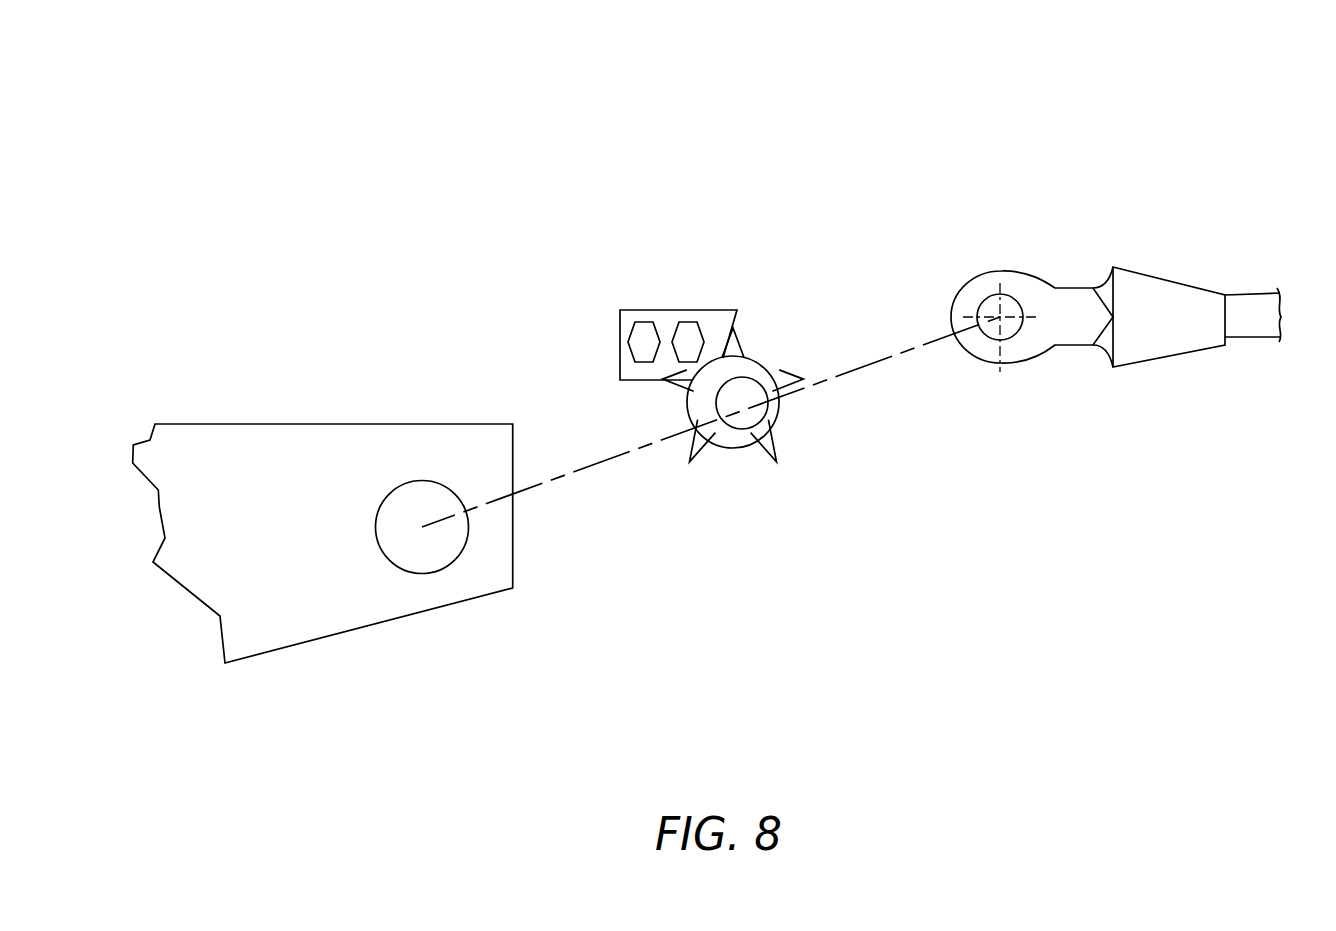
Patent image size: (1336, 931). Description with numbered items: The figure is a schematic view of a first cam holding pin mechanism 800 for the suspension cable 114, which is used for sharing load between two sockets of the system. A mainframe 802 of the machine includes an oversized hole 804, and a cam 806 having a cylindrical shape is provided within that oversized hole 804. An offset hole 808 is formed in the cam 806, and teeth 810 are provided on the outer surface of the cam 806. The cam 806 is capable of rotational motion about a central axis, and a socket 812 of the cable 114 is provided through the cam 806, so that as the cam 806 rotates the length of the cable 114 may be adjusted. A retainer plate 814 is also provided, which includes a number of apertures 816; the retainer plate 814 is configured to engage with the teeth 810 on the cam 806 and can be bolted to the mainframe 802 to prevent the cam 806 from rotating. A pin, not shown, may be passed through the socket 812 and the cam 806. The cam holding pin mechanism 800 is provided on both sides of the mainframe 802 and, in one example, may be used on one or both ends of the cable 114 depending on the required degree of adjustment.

The first cam holding pin mechanism 800 is at (1121, 76).
The mainframe 802 is at (270, 440).
The oversized hole 804 is at (426, 497).
The cam 806 is at (753, 372).
The offset hole 808 is at (764, 420).
The teeth 810 is at (702, 448).
The socket 812 is at (1134, 253).
The retainer plate 814 is at (720, 315).
The apertures 816 is at (642, 322).
The cable 114 is at (1252, 302).